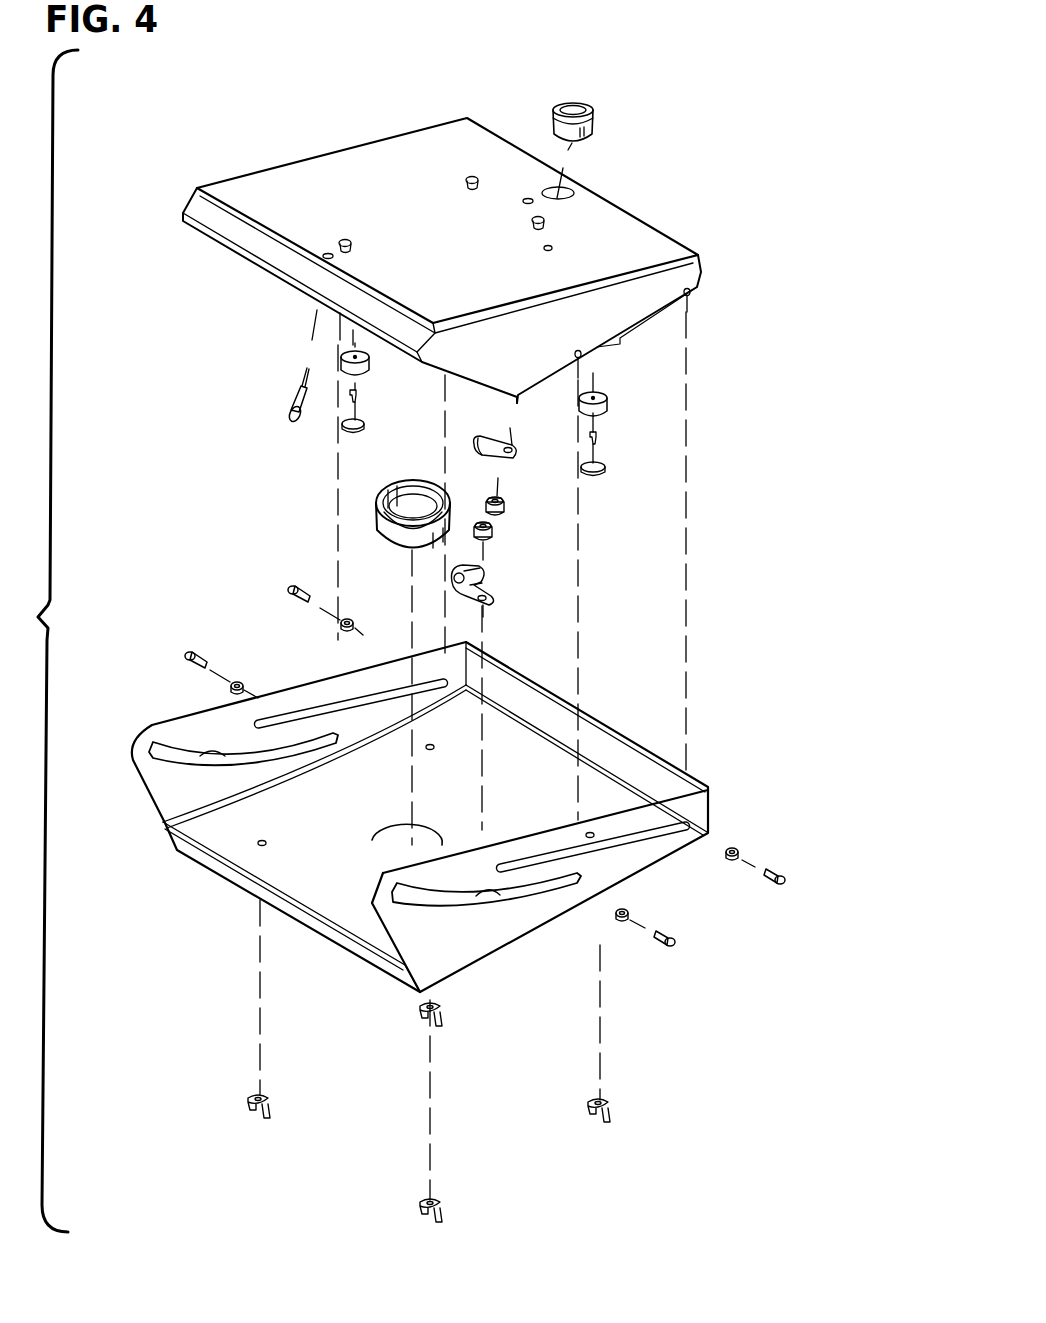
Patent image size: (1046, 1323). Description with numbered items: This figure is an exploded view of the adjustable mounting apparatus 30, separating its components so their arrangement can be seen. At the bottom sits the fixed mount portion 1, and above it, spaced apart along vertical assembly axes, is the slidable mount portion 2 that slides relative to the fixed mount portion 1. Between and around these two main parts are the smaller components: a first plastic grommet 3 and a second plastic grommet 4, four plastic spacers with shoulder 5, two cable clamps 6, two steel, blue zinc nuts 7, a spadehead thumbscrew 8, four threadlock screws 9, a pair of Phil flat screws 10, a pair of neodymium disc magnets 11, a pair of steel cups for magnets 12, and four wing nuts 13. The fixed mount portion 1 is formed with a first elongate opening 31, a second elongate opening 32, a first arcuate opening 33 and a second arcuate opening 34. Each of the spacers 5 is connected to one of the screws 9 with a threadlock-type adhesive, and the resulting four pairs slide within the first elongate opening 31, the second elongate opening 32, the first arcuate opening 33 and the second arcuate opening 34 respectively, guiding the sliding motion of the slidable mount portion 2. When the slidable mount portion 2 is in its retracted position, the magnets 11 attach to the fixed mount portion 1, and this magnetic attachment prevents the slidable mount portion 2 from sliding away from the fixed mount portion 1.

The fixed mount portion 1 is at (700, 775).
The slidable mount portion 2 is at (613, 203).
The first plastic grommet 3 is at (585, 100).
The second plastic grommet 4 is at (397, 487).
The plastic spacers with shoulder 5 is at (350, 618).
The cable clamps 6 is at (485, 438).
The steel, blue zinc nuts 7 is at (495, 532).
The spadehead thumbscrew 8 is at (288, 411).
The threadlock screws 9 is at (292, 588).
The Phil flat screws 10 is at (359, 400).
The neodymium disc magnets 11 is at (362, 431).
The steel cups for magnets 12 is at (362, 372).
The wing nuts 13 is at (248, 1100).
The adjustable mounting apparatus 30 is at (697, 68).
The first elongate opening 31 is at (308, 705).
The second elongate opening 32 is at (657, 827).
The first arcuate opening 33 is at (182, 755).
The second arcuate opening 34 is at (492, 893).